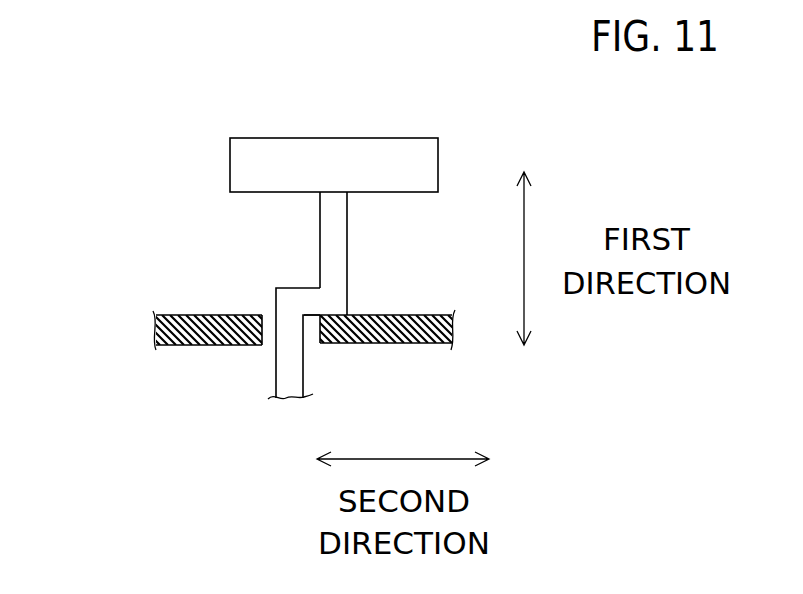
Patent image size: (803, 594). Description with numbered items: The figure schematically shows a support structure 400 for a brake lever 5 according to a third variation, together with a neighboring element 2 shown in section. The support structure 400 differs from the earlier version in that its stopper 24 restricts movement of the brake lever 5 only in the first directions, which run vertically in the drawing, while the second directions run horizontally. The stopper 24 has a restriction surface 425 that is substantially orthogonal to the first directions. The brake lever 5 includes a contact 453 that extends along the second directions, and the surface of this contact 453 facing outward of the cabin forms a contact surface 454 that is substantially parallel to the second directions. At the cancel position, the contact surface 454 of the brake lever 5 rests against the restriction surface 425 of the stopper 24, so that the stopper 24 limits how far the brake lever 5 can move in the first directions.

The support structure 400 is at (154, 157).
The brake lever 5 is at (349, 248).
The contact 453 is at (303, 288).
The substrate 2 is at (208, 313).
The stopper 24 is at (408, 343).
The restriction surface 425 is at (340, 315).
The contact surface 454 is at (342, 343).